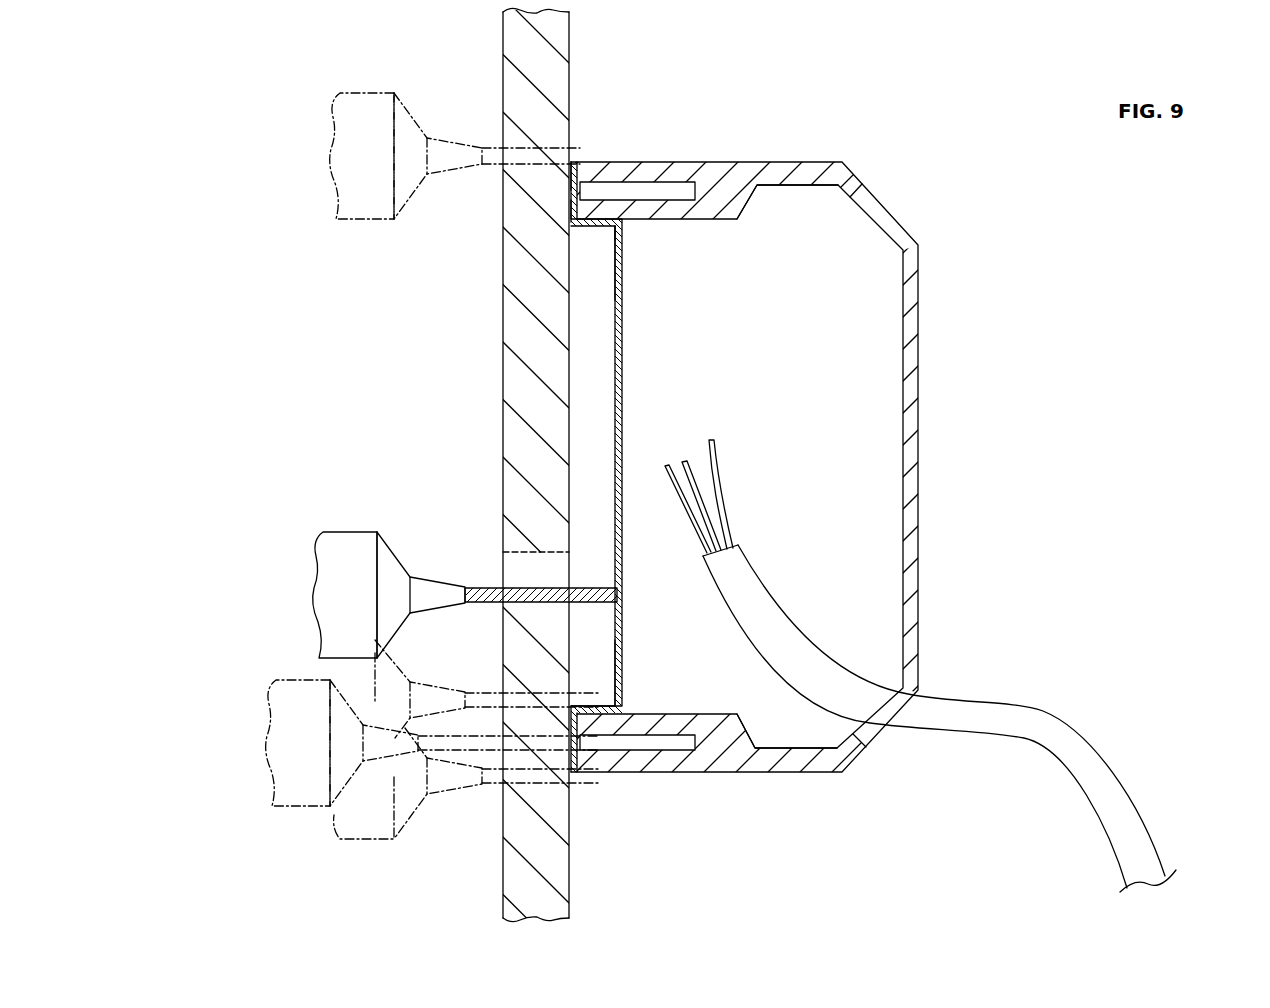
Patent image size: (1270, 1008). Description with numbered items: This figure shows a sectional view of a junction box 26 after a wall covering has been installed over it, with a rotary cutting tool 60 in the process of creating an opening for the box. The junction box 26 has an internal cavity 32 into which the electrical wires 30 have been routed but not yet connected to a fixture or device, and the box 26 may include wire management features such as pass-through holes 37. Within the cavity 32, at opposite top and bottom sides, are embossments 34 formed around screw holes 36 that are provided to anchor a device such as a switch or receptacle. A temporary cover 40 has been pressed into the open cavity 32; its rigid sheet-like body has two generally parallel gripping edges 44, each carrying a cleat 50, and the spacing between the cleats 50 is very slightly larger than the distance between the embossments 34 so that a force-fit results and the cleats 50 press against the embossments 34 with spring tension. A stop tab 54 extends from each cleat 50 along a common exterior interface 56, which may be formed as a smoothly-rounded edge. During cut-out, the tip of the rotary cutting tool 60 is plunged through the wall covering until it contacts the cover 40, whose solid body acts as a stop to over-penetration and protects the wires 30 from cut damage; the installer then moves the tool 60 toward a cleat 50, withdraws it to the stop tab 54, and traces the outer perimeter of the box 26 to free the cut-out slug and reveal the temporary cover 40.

The junction box 26 is at (900, 207).
The electrical wires 30 is at (752, 591).
The internal cavity 32 is at (816, 404).
The embossments 34 is at (728, 222).
The screw holes 36 is at (650, 190).
The pass-through holes 37 is at (912, 230).
The temporary cover 40 is at (623, 395).
The gripping edges 44 is at (604, 222).
The cleats 50 is at (613, 232).
The stop tabs 54 is at (571, 182).
The exterior interface 56 is at (573, 221).
The rotary cutting tool 60 is at (333, 118).